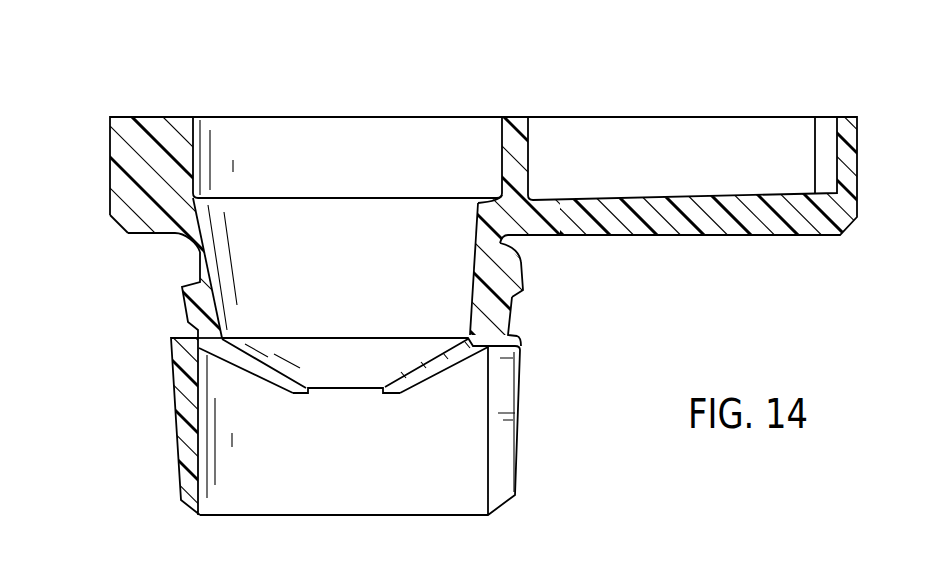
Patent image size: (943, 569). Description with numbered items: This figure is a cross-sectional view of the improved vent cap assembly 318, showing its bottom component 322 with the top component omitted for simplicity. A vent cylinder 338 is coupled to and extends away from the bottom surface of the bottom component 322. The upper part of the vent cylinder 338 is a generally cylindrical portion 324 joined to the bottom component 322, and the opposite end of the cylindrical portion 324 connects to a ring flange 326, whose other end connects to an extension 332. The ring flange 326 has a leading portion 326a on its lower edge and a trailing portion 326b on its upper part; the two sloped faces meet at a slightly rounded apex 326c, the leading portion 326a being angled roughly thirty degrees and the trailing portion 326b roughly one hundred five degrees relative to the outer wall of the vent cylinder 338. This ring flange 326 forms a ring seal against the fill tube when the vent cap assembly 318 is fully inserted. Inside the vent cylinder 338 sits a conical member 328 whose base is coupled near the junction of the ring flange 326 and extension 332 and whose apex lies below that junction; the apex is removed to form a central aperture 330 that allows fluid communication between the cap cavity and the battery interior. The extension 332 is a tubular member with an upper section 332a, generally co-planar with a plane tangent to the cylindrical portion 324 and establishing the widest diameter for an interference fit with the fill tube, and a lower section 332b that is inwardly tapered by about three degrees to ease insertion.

The vent cap assembly 318 is at (101, 92).
The bottom component 322 is at (120, 147).
The cylindrical portion 324 is at (200, 256).
The ring flange 326 is at (562, 290).
The leading portion 326a is at (511, 318).
The trailing portion 326b is at (510, 272).
The apex 326c is at (523, 293).
The conical member 328 is at (430, 380).
The central aperture 330 is at (332, 392).
The extension 332 is at (145, 402).
The upper section 332a is at (170, 357).
The lower section 332b is at (177, 443).
The vent cylinder 338 is at (553, 396).